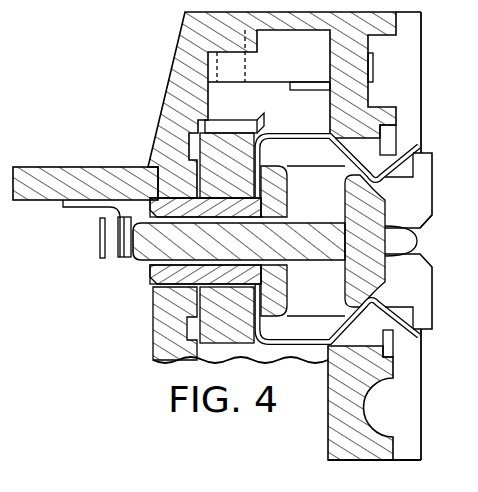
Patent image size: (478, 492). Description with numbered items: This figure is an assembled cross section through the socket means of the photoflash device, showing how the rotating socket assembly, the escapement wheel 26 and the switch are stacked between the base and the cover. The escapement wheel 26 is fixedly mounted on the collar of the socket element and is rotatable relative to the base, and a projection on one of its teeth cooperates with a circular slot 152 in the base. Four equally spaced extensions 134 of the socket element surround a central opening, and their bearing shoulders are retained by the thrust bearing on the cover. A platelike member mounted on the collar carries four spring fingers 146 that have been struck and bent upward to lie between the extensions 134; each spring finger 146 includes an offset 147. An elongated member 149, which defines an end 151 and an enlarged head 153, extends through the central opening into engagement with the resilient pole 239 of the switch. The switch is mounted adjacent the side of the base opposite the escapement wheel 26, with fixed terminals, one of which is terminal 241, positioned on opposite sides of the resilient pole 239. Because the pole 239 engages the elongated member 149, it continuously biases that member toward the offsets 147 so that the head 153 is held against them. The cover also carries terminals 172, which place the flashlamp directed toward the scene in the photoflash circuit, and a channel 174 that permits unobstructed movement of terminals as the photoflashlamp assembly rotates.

The escapement wheel 26 is at (233, 330).
The extensions 134 is at (425, 190).
The spring fingers 146 is at (406, 152).
The offsets 147 is at (404, 180).
The elongated member 149 is at (320, 237).
The end 151 is at (151, 284).
The circular slot 152 is at (163, 338).
The enlarged head 153 is at (418, 219).
The terminals 172 is at (374, 65).
The channel 174 is at (365, 404).
The resilient pole 239 is at (122, 258).
The fixed terminal 241 is at (98, 237).